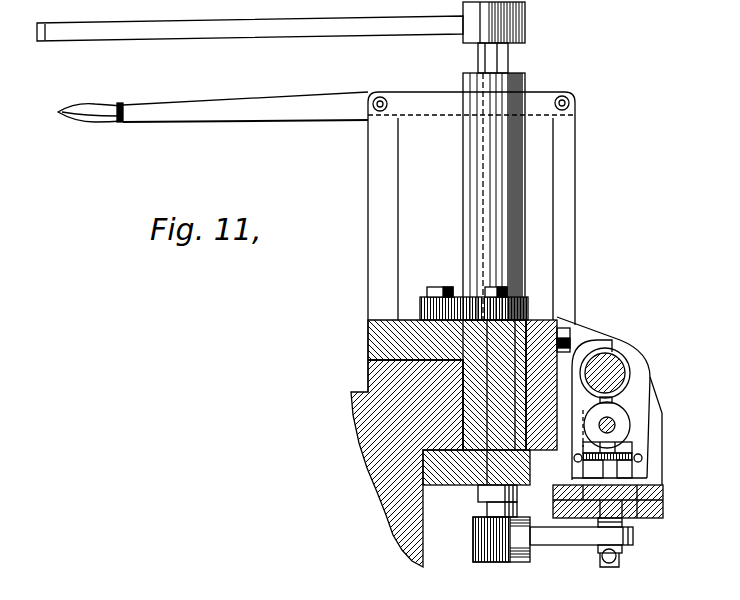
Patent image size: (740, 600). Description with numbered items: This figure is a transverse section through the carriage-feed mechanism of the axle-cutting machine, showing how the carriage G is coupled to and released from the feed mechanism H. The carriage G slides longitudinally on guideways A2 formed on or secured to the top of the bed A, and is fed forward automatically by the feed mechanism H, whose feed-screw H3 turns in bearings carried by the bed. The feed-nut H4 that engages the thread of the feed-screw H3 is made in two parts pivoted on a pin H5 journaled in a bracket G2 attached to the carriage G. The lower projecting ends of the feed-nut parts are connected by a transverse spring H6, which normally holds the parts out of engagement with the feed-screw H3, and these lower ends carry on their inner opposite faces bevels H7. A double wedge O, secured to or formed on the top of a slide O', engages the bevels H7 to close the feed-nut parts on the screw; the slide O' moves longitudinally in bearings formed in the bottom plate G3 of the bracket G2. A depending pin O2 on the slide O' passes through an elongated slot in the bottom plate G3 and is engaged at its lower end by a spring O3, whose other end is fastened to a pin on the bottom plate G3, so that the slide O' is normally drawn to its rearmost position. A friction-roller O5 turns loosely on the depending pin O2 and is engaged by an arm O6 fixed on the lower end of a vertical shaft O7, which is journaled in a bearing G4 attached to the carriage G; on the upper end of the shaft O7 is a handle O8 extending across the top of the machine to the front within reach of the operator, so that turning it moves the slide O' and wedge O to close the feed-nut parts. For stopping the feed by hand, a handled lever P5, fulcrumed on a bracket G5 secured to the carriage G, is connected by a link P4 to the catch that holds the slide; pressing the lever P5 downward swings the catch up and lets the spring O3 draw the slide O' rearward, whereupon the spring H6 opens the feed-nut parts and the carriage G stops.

The handle O8 is at (291, 30).
The handled lever P5 is at (248, 113).
The feed mechanism H is at (515, 288).
The bracket G5 is at (368, 182).
The link P4 is at (565, 142).
The bearing G4 is at (463, 165).
The carriage G is at (368, 343).
The bed A is at (380, 503).
The guideways A2 is at (440, 402).
The bracket G2 is at (581, 325).
The feed-screw H3 is at (622, 358).
The feed-nut H4 is at (637, 393).
The pin H5 is at (615, 425).
The transverse spring H6 is at (633, 448).
The bevels H7 is at (575, 450).
The double wedge O is at (642, 475).
The bottom plate G3 is at (665, 508).
The slide O' is at (627, 501).
The arm O6 is at (549, 545).
The friction-roller O5 is at (623, 550).
The spring O3 is at (605, 562).
The depending pin O2 is at (618, 562).
The shaft O7 is at (493, 565).